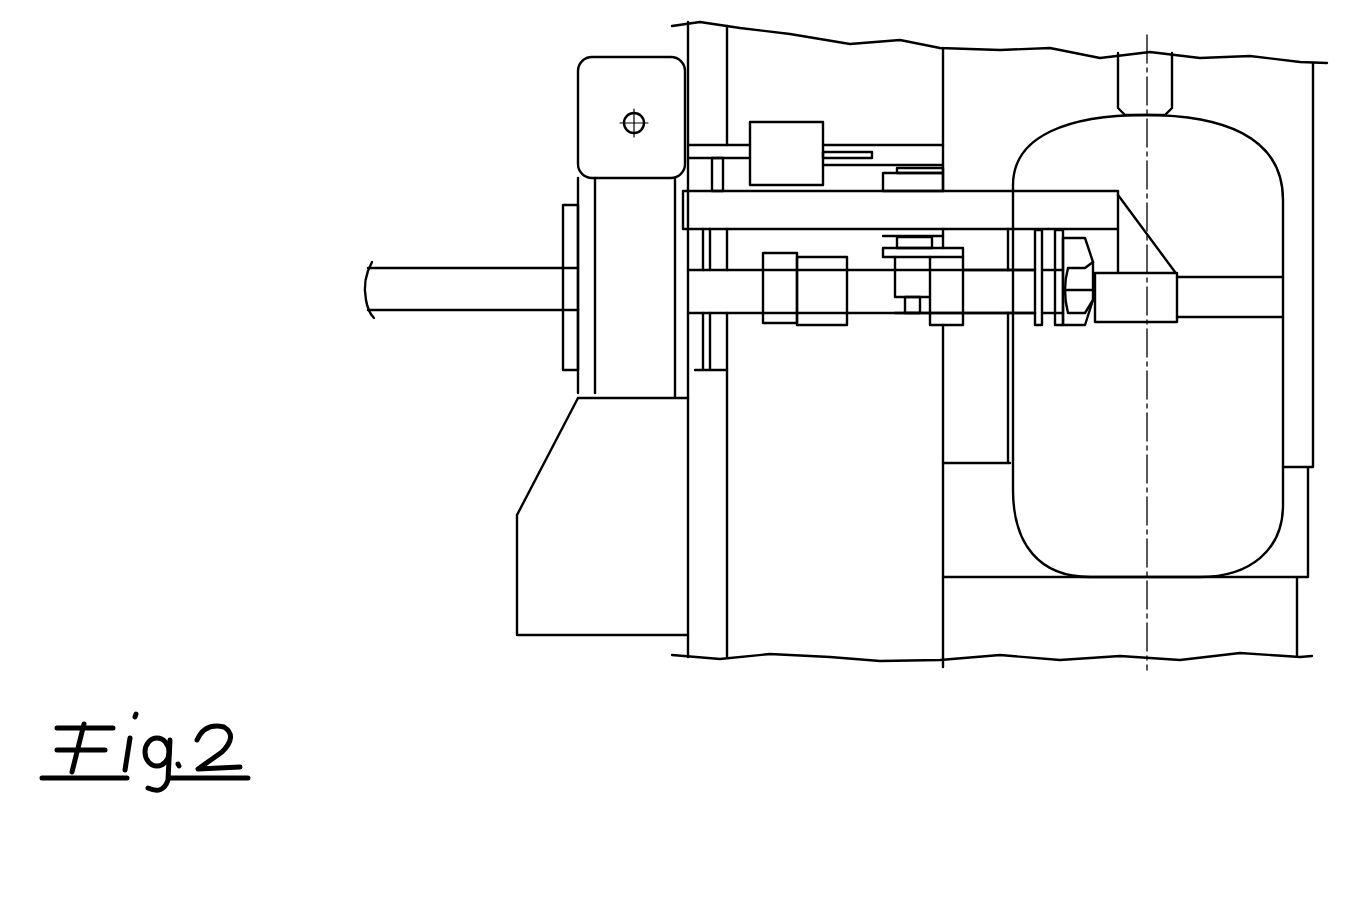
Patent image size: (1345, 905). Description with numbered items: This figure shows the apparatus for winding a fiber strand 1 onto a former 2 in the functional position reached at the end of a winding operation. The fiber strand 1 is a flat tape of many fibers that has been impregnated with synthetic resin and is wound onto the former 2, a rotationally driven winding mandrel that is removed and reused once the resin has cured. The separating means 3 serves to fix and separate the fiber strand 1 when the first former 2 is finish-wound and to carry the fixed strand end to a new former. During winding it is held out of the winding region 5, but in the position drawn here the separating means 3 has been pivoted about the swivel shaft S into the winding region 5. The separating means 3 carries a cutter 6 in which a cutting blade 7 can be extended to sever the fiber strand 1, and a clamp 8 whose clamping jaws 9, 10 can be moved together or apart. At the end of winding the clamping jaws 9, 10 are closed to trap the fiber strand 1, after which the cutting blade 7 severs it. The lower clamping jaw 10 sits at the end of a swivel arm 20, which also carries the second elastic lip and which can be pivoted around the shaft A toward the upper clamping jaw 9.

The fiber strand 1 is at (458, 266).
The former 2 is at (1252, 477).
The separating means 3 is at (1152, 250).
The winding region 5 is at (985, 322).
The cutter 6 is at (1082, 328).
The cutting blade 7 is at (1058, 327).
The clamp 8 is at (917, 322).
The clamping jaw 9 is at (1040, 323).
The clamping jaw 10 is at (958, 323).
The swivel arm 20 is at (890, 275).
The shaft A is at (900, 304).
The swivel shaft S is at (623, 119).